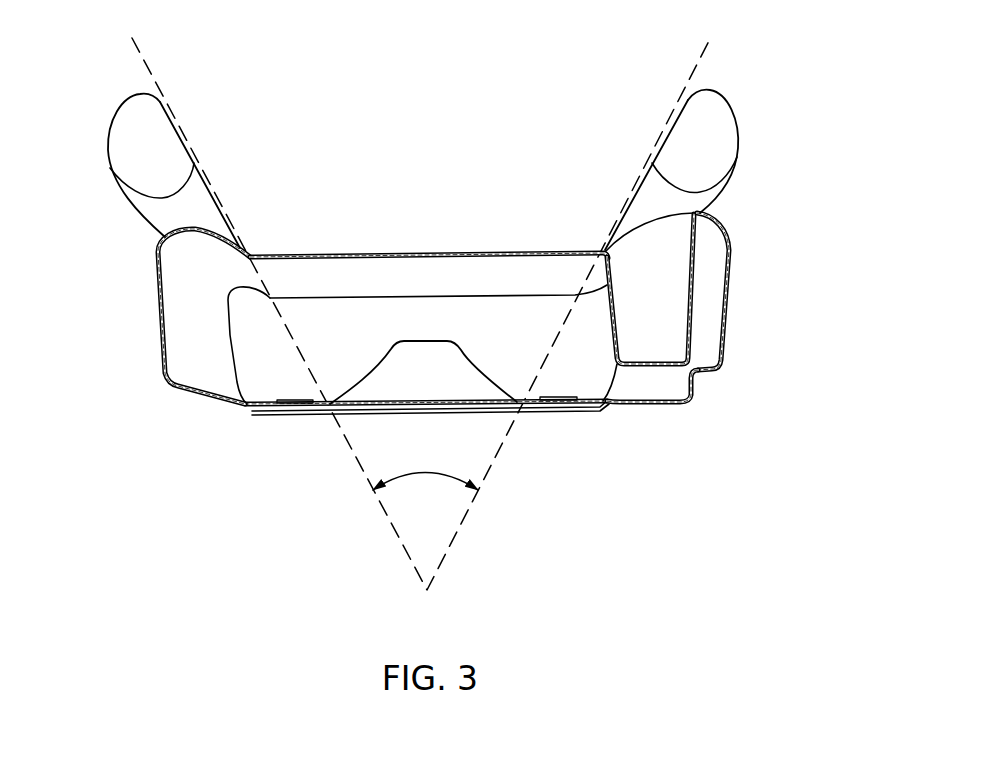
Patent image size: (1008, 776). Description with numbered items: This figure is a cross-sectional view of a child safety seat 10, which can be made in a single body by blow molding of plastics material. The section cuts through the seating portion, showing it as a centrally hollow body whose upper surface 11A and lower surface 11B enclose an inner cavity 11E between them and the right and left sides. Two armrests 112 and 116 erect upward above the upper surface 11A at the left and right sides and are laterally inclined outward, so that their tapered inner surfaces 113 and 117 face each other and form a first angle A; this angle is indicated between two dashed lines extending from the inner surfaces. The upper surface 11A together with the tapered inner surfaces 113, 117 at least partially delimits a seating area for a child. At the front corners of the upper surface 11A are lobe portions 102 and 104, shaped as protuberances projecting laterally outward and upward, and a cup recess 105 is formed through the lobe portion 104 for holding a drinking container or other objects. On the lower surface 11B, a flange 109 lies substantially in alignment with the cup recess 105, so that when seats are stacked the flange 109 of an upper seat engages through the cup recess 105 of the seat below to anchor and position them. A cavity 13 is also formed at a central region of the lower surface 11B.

The child safety seat 10 is at (805, 90).
The lobe portion 102 is at (172, 228).
The lobe portion 104 is at (722, 226).
The cup recess 105 is at (668, 256).
The flange 109 is at (697, 385).
The armrest 112 is at (130, 92).
The tapered inner surface 113 is at (187, 137).
The armrest 116 is at (717, 86).
The tapered inner surface 117 is at (660, 136).
The upper surface 11A is at (425, 253).
The lower surface 11B is at (267, 404).
The inner cavity 11E is at (417, 323).
The cavity 13 is at (437, 362).
The first angle A is at (425, 493).